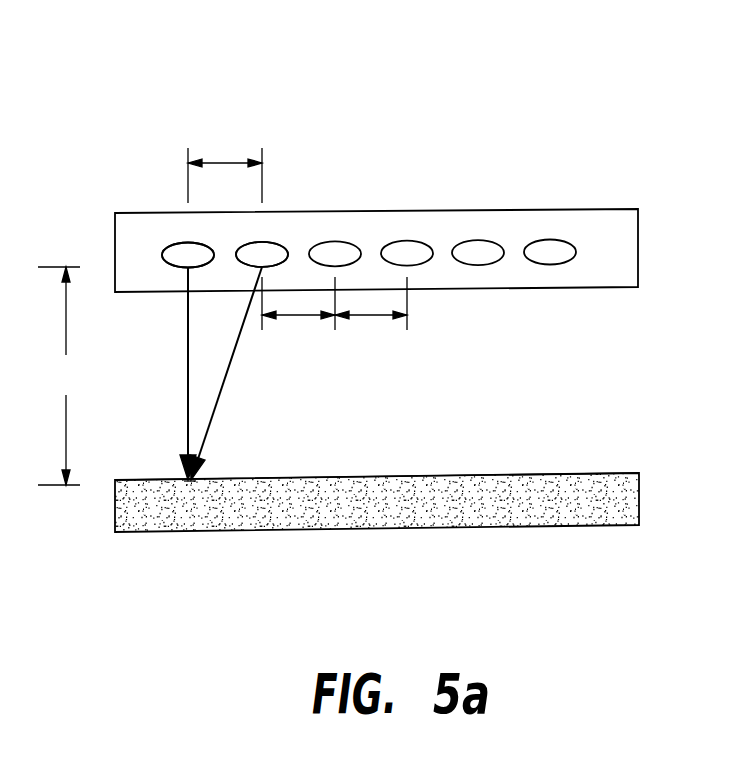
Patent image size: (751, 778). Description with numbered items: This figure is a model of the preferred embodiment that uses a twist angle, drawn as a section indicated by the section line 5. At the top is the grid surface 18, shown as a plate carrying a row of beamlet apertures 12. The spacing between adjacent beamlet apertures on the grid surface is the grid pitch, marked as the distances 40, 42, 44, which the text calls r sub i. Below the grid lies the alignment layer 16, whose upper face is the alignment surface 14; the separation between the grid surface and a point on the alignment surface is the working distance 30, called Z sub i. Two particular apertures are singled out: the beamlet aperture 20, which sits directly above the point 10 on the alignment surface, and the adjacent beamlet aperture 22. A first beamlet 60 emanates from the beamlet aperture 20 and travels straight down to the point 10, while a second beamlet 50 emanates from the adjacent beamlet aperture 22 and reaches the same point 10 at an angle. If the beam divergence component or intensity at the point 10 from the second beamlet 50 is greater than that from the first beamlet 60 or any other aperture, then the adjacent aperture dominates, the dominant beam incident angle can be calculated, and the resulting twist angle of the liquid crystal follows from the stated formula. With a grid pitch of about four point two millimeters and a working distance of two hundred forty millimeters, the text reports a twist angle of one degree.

The section line 5 is at (720, 100).
The point on the alignment surface 10 is at (197, 477).
The beamlet apertures 12 is at (555, 252).
The alignment surface 14 is at (432, 475).
The alignment layer 16 is at (645, 463).
The grid surface 18 is at (645, 200).
The beamlet aperture 20 is at (170, 240).
The beamlet aperture 22 is at (277, 240).
The working distance 30 is at (59, 376).
The grid pitch 40 is at (227, 163).
The grid pitch 42 is at (293, 315).
The grid pitch 44 is at (370, 315).
The second beamlet 50 is at (231, 360).
The first beamlet 60 is at (188, 380).